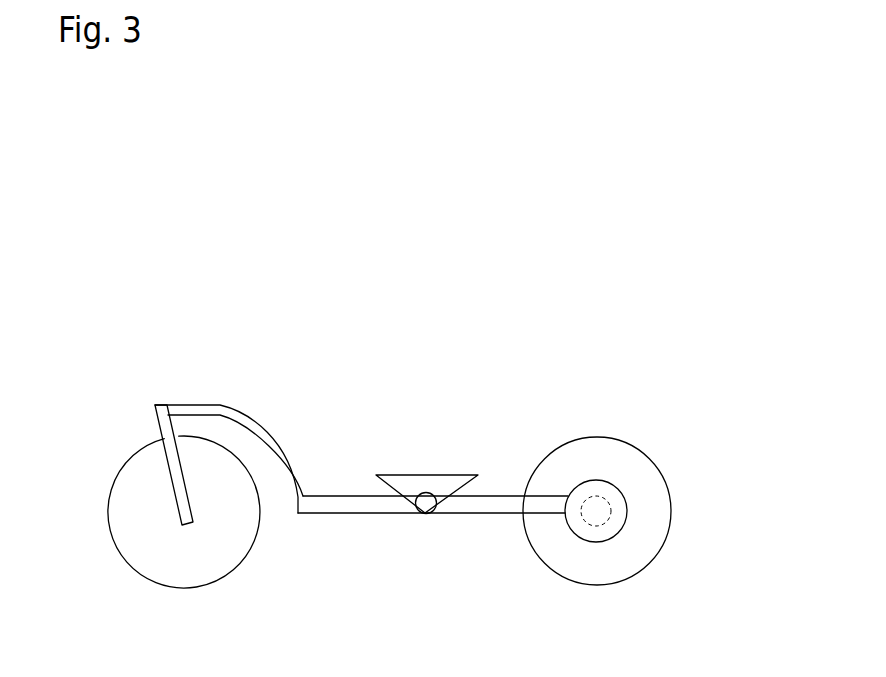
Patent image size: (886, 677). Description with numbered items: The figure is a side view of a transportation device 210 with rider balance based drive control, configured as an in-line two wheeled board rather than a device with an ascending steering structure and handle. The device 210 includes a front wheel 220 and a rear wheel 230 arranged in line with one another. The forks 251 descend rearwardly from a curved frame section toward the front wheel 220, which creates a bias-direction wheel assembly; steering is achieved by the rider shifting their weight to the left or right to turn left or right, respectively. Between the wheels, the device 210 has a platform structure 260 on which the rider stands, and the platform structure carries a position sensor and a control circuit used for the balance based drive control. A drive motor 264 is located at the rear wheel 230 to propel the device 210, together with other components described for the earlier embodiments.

The transportation device 210 is at (652, 349).
The front wheel 220 is at (230, 573).
The rear wheel 230 is at (633, 582).
The forks 251 is at (158, 437).
The platform structure 260 is at (423, 476).
The drive motor 264 is at (620, 492).